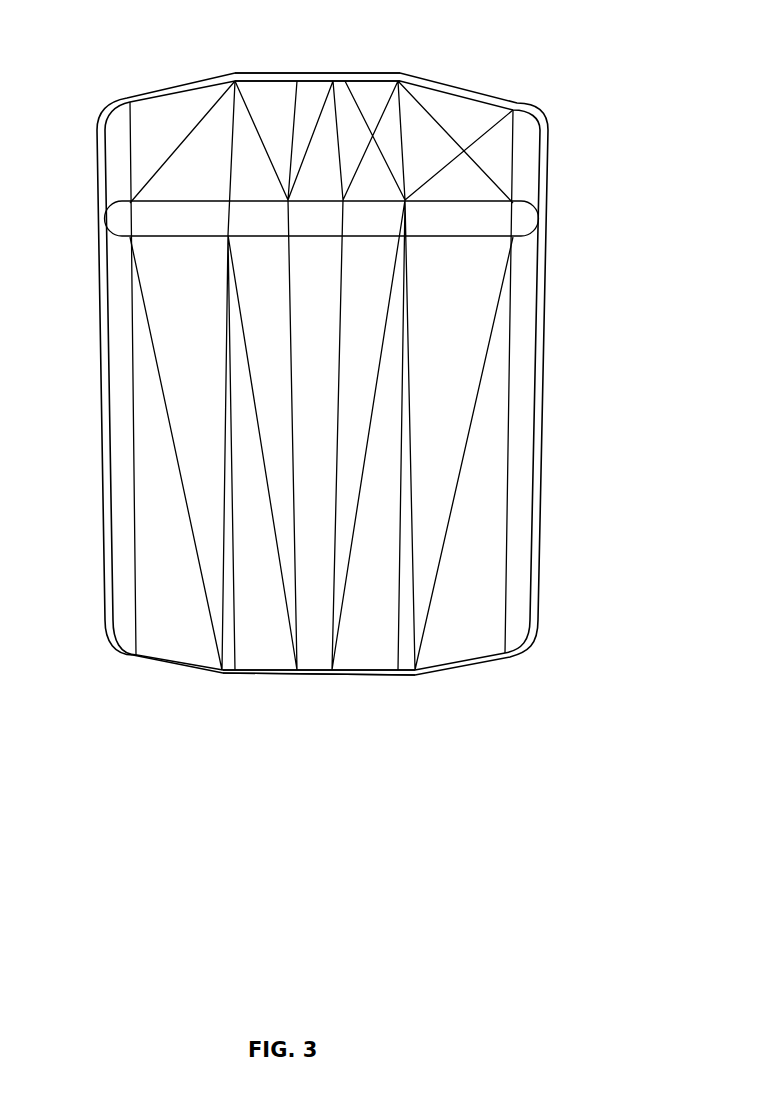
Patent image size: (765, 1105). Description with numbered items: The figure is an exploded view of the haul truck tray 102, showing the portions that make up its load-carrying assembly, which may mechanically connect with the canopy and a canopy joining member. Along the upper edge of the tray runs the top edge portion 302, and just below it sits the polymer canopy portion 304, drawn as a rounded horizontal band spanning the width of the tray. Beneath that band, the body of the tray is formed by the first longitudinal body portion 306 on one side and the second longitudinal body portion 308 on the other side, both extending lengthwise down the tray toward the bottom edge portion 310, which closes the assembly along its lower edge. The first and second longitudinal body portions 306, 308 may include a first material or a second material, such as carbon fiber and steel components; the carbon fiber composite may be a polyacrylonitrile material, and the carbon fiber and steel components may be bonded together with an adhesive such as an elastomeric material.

The haul truck tray 102 is at (446, 816).
The top edge portion 302 is at (315, 73).
The polymer canopy portion 304 is at (548, 194).
The first longitudinal body portion 306 is at (172, 525).
The second longitudinal body portion 308 is at (478, 507).
The bottom edge portion 310 is at (320, 676).